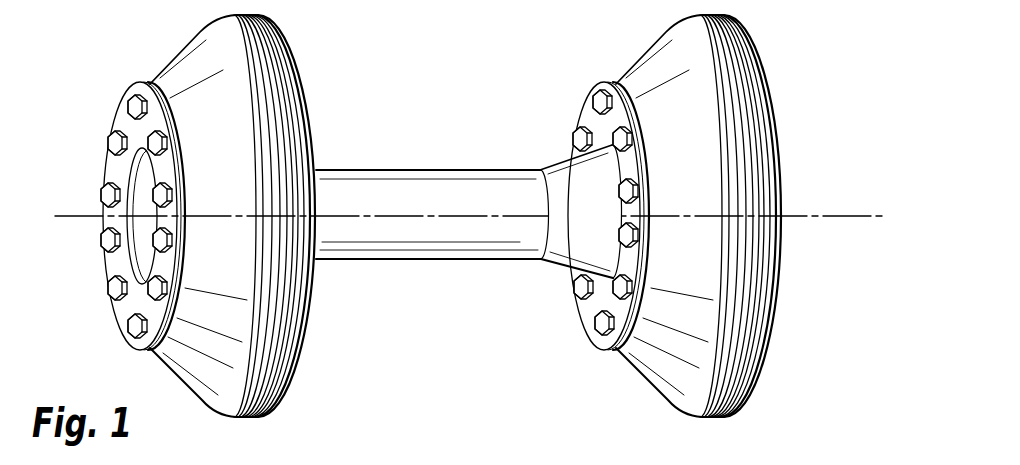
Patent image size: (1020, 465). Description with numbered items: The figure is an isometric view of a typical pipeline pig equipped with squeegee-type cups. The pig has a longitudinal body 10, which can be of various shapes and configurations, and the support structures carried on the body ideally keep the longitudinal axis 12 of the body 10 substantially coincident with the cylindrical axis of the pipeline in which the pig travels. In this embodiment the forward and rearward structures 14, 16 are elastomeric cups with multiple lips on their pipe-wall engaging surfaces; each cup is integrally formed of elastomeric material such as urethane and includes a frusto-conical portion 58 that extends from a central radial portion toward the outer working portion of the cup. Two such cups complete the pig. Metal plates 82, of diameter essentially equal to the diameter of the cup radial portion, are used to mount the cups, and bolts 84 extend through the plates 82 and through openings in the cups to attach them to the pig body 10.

The longitudinal body 10 is at (378, 243).
The longitudinal axis 12 is at (407, 213).
The forward structure 14 is at (128, 68).
The rearward structure 16 is at (612, 45).
The frusto-conical portion 58 is at (188, 65).
The metal plates 82 is at (123, 122).
The bolts 84 is at (122, 332).